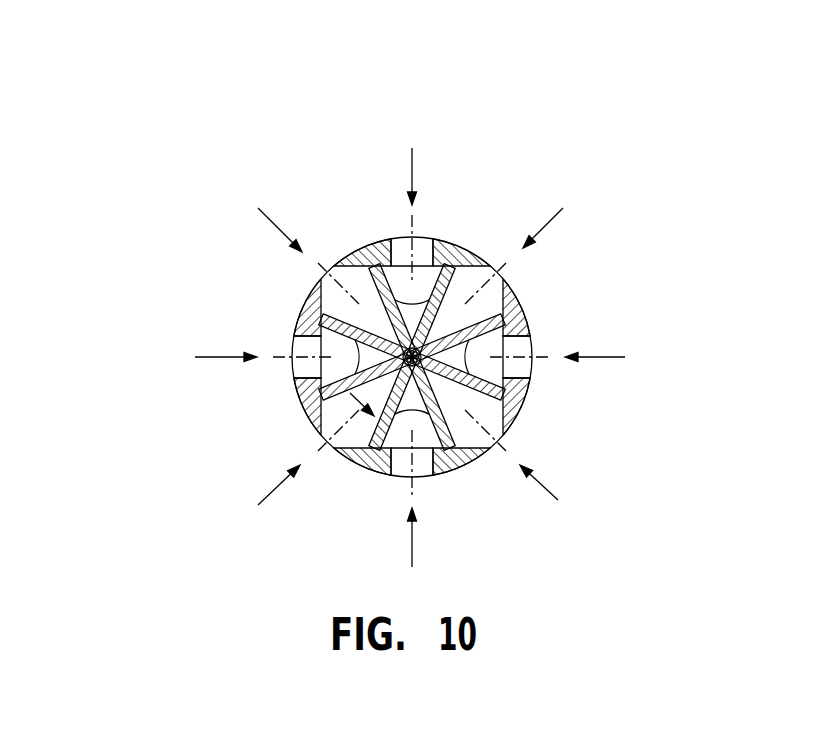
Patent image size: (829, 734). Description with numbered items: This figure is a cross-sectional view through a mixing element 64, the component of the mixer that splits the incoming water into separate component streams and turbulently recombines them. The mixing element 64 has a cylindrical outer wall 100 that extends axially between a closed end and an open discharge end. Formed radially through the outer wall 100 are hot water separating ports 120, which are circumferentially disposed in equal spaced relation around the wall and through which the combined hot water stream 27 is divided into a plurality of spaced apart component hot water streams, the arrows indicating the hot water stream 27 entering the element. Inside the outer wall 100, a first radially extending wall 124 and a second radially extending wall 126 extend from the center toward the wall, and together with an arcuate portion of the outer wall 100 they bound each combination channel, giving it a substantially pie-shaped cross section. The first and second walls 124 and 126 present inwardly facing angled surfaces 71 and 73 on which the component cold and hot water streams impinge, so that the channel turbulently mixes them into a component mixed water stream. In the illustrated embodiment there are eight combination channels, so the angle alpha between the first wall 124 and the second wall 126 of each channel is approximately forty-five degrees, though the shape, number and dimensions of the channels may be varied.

The mixing element 64 is at (580, 140).
The cylindrical outer wall 100 is at (530, 318).
The hot water separating ports 120 is at (493, 327).
The first radially extending wall 124 is at (398, 246).
The second radially extending wall 126 is at (417, 242).
The inwardly facing angled surface 71 is at (300, 403).
The inwardly facing angled surface 73 is at (296, 370).
The combined hot water stream 27 is at (220, 356).
The angle between first wall and second wall alpha is at (317, 433).